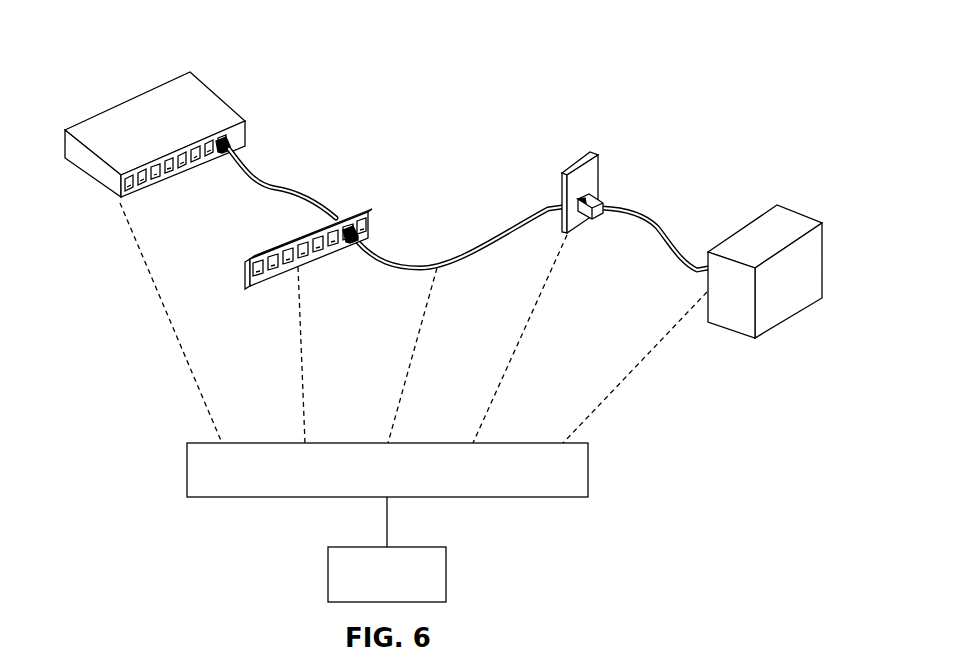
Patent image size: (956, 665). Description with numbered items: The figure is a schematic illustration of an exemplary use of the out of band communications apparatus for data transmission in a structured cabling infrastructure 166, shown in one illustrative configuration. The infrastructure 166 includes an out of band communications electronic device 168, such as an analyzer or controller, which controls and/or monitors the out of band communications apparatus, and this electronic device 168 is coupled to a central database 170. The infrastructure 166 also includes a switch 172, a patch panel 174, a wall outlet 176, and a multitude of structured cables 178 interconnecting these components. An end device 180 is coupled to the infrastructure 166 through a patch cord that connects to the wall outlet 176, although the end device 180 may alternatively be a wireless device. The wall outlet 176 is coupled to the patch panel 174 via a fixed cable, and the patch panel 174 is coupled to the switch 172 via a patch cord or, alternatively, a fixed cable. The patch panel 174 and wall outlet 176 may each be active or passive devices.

The structured cabling infrastructure 166 is at (124, 41).
The out of band communications electronic device 168 is at (187, 478).
The central database 170 is at (362, 547).
The switch 172 is at (210, 100).
The patch panel 174 is at (365, 200).
The wall outlet 176 is at (590, 174).
The structured cables 178 is at (278, 183).
The end device 180 is at (787, 307).